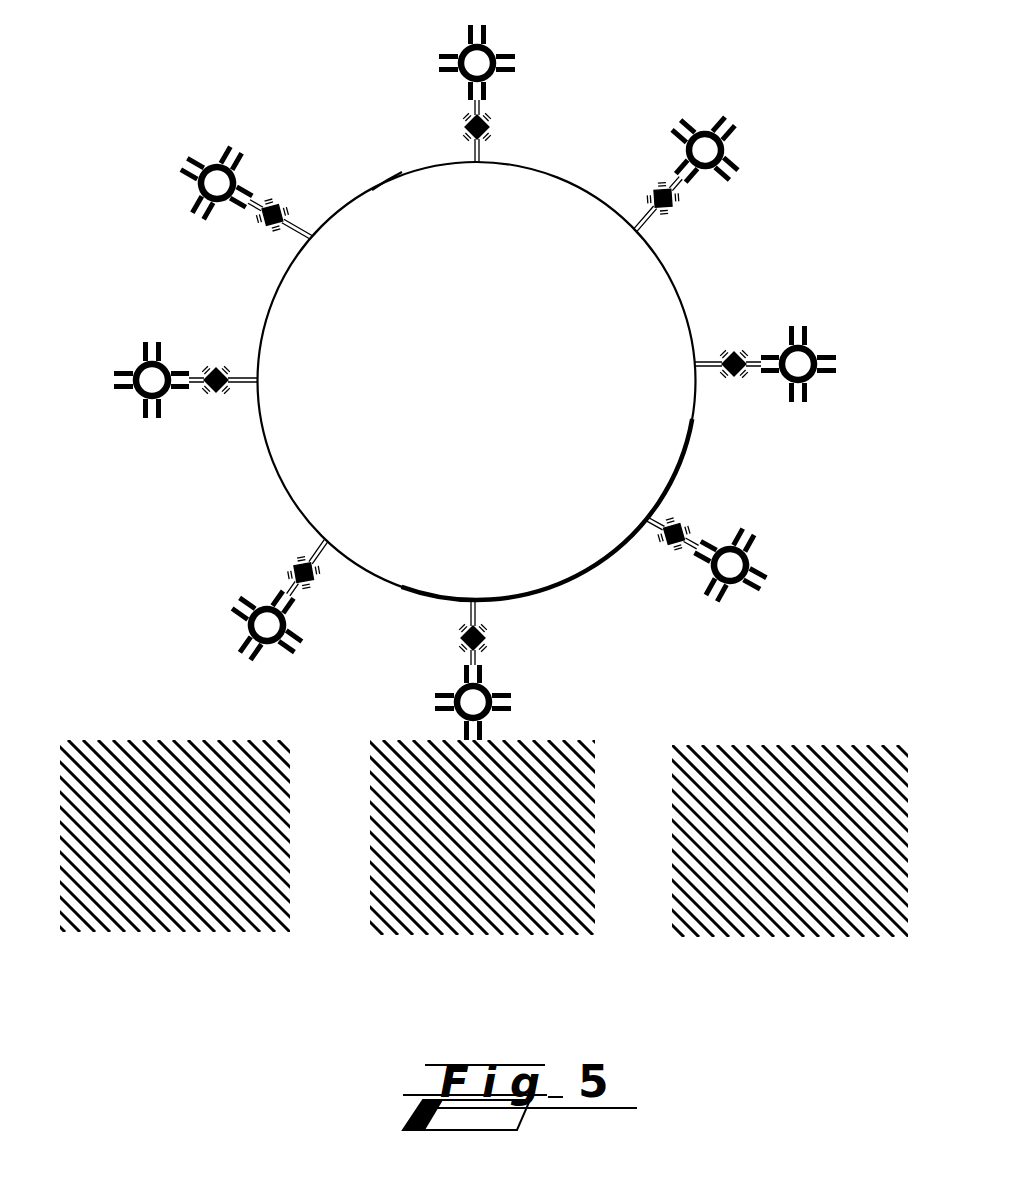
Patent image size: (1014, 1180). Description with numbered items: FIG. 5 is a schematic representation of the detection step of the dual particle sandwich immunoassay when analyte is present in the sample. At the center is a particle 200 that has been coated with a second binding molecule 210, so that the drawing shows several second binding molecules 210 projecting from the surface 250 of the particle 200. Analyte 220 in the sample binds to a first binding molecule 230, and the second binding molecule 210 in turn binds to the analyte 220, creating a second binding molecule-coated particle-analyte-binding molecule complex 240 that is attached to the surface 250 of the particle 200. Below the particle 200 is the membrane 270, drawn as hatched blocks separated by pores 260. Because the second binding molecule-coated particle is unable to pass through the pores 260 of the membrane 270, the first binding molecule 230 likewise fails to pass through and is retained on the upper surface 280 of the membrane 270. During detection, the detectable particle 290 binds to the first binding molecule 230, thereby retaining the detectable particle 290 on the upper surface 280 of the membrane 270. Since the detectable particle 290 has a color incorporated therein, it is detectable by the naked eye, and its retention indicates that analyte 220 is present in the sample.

The particle 200 is at (551, 188).
The surface of the particle 250 is at (387, 184).
The second binding molecule-coated particle-analyte-binding molecule complex 240 is at (687, 287).
The detectable particle 290 is at (133, 397).
The first binding molecule 230 is at (197, 392).
The analyte 220 is at (216, 369).
The second binding molecule 210 is at (243, 386).
The pores 260 is at (640, 750).
The upper surface of the membrane 280 is at (407, 745).
The membrane 270 is at (782, 732).